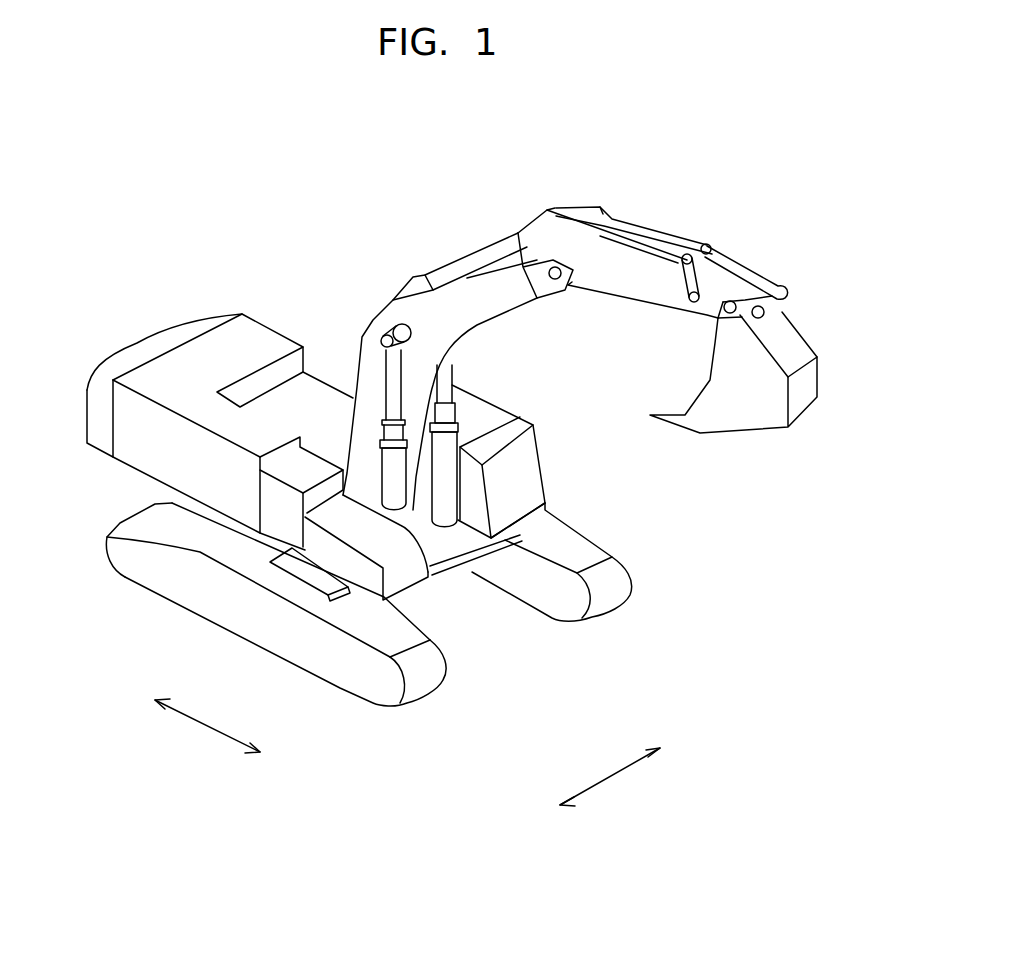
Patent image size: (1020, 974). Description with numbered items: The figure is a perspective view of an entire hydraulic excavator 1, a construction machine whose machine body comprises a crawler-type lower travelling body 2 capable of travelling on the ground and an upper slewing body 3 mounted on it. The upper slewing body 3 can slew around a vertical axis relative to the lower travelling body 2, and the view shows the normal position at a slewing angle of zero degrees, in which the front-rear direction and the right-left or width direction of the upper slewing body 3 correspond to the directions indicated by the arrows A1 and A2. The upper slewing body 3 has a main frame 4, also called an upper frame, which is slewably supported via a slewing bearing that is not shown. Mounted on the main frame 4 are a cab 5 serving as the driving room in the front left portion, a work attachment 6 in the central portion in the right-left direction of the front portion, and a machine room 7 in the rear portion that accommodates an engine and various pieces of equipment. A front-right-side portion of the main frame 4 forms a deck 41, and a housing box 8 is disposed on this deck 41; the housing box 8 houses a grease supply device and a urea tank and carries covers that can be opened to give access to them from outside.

The hydraulic excavator 1 is at (231, 211).
The lower travelling body 2 is at (656, 570).
The upper slewing body 3 is at (520, 389).
The main frame 4 is at (433, 573).
The cab 5 is at (523, 470).
The work attachment 6 is at (470, 303).
The machine room 7 is at (207, 357).
The housing box 8 is at (395, 540).
The deck 41 is at (375, 590).
The arrow indicating front-rear direction A1 is at (203, 727).
The arrow indicating right-left direction A2 is at (607, 773).